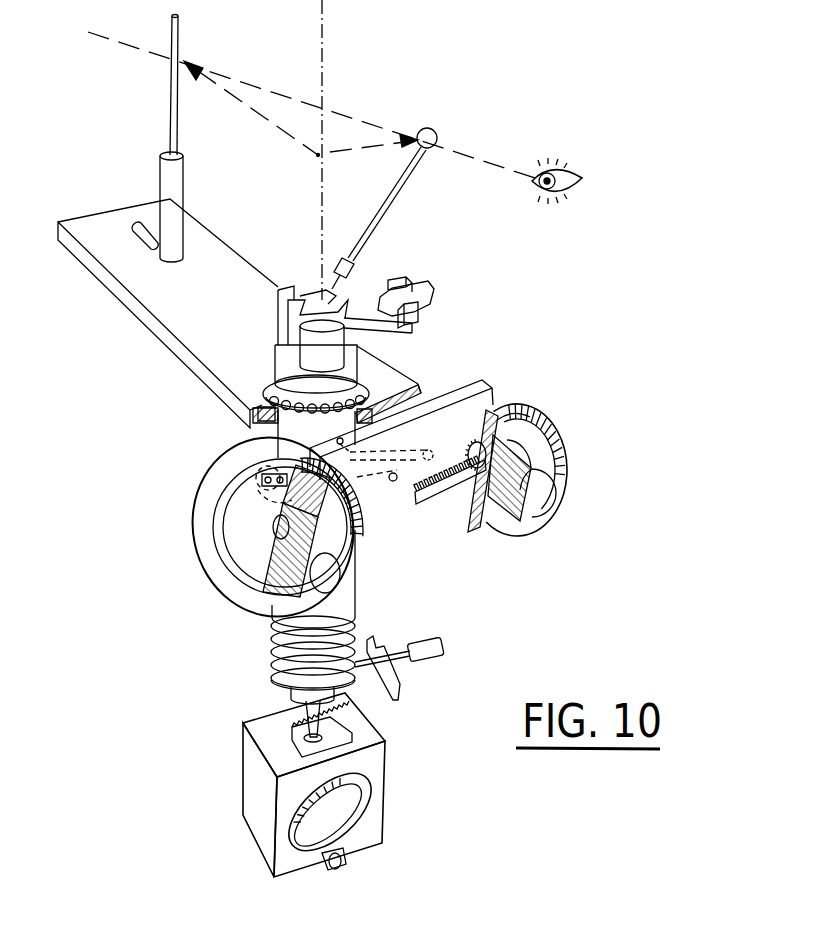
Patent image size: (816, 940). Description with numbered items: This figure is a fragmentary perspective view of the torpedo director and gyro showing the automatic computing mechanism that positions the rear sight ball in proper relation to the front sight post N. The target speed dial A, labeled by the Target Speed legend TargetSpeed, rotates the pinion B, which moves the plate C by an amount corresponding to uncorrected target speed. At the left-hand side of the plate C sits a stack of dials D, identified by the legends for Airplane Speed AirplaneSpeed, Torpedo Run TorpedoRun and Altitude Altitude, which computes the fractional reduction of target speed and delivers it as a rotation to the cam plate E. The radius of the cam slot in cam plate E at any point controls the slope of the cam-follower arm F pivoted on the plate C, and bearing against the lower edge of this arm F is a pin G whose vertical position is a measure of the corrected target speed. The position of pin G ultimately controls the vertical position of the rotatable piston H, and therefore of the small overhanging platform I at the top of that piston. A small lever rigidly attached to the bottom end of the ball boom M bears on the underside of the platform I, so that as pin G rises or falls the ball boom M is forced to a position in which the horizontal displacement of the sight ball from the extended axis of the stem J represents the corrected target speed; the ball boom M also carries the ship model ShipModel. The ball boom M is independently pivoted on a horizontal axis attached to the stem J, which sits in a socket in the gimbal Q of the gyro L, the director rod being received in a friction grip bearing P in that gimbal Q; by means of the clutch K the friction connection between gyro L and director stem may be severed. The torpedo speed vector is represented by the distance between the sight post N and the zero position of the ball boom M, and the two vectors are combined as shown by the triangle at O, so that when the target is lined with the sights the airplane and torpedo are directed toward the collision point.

The sight post N is at (177, 139).
The triangle O is at (332, 143).
The overhanging platform I is at (297, 280).
The ball boom M is at (356, 333).
The rotatable piston H is at (315, 408).
The pin G is at (367, 456).
The cam-follower arm F is at (391, 457).
The plate C is at (401, 430).
The pinion B is at (469, 458).
The target speed dial A is at (540, 503).
The cam plate E is at (236, 470).
The stack of dials D is at (304, 527).
The stem J is at (302, 705).
The clutch K is at (399, 669).
The friction grip bearing P is at (300, 740).
The gyro gimbal Q is at (335, 733).
The gyro L is at (373, 797).
The ship model ShipModel is at (428, 292).
The target speed scale TargetSpeed is at (520, 405).
The airplane speed scale AirplaneSpeed is at (357, 507).
The torpedo run scale TorpedoRun is at (362, 511).
The altitude scale Altitude is at (367, 515).